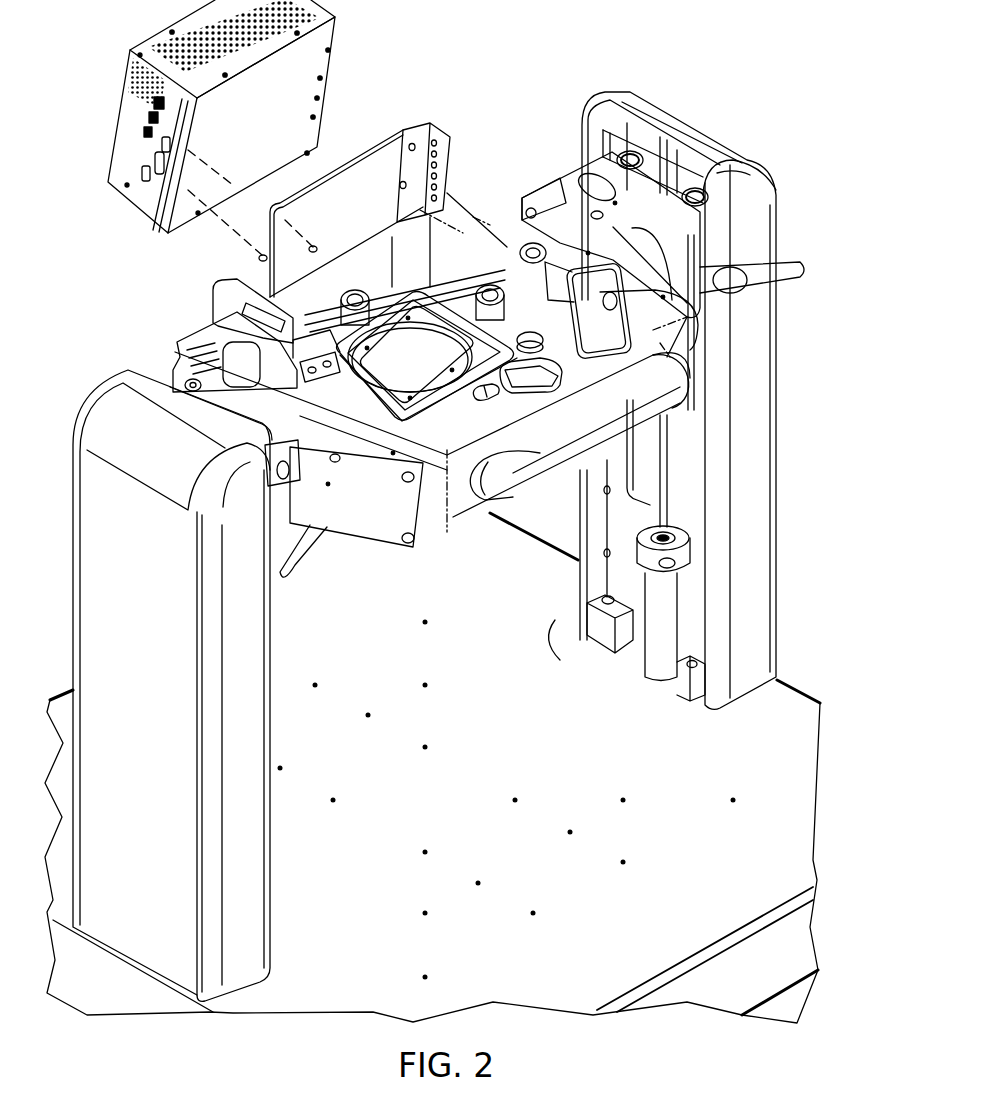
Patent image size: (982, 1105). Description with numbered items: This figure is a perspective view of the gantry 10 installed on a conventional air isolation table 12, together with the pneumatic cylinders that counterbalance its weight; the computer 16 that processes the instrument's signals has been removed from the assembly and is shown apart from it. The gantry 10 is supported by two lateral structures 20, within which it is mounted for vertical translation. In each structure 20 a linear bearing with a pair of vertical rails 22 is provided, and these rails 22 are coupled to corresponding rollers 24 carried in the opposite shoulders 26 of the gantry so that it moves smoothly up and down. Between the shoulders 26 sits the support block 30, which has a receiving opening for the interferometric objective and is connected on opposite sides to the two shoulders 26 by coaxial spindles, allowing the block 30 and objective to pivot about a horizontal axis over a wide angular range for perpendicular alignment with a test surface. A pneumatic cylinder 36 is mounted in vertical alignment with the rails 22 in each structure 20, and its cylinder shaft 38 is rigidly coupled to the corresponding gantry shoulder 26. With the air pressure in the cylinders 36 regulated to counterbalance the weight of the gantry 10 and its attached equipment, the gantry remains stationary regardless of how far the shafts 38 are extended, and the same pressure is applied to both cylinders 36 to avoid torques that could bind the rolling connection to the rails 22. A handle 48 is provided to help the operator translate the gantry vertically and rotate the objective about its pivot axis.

The gantry 10 is at (444, 535).
The air isolation table 12 is at (583, 956).
The computer 16 is at (143, 215).
The lateral structure 20 is at (757, 367).
The vertical rails 22 is at (607, 577).
The rollers 24 is at (633, 145).
The shoulder 26 is at (210, 415).
The support block 30 is at (487, 517).
The pneumatic cylinder 36 is at (657, 663).
The cylinder shaft 38 is at (660, 493).
The handle 48 is at (613, 430).